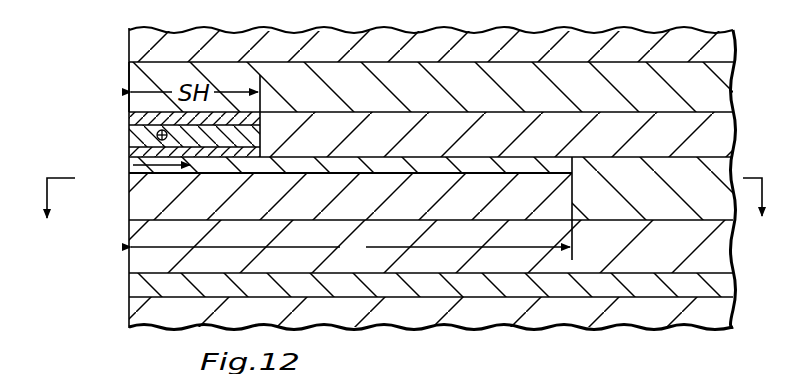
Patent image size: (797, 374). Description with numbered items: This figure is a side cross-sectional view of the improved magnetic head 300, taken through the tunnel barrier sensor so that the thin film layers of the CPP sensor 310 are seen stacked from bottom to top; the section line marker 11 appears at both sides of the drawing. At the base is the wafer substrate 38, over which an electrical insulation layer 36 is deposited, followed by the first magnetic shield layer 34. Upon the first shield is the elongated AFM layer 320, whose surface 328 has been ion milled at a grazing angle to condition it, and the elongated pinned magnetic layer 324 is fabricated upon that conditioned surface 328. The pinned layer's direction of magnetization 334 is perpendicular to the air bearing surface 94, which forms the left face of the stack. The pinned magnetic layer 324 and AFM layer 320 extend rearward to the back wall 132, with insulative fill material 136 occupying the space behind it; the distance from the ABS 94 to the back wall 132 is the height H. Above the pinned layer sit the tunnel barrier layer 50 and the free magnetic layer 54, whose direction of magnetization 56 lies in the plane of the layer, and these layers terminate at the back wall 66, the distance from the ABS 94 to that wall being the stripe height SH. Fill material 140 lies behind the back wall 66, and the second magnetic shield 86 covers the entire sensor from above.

The magnetic head 300 is at (122, 62).
The CPP sensor 310 is at (118, 93).
The second magnetic shield 86 is at (431, 87).
The back wall 66 is at (269, 133).
The fill material 140 is at (558, 158).
The direction of magnetization of the free magnetic layer 56 is at (128, 123).
The free magnetic layer 54 is at (137, 137).
The tunnel barrier layer 50 is at (138, 152).
The direction of magnetization of the pinned magnetic layer 334 is at (158, 163).
The surface of the AFM layer 328 is at (378, 172).
The pinned magnetic layer 324 is at (144, 180).
The AFM layer 320 is at (144, 207).
The back wall 132 is at (574, 195).
The insulative fill material 136 is at (652, 188).
The first magnetic shield layer 34 is at (431, 246).
The air bearing surface 94 is at (128, 262).
The electrical insulation layer 36 is at (140, 286).
The wafer substrate 38 is at (431, 313).
The section line 11- 11 is at (409, 214).